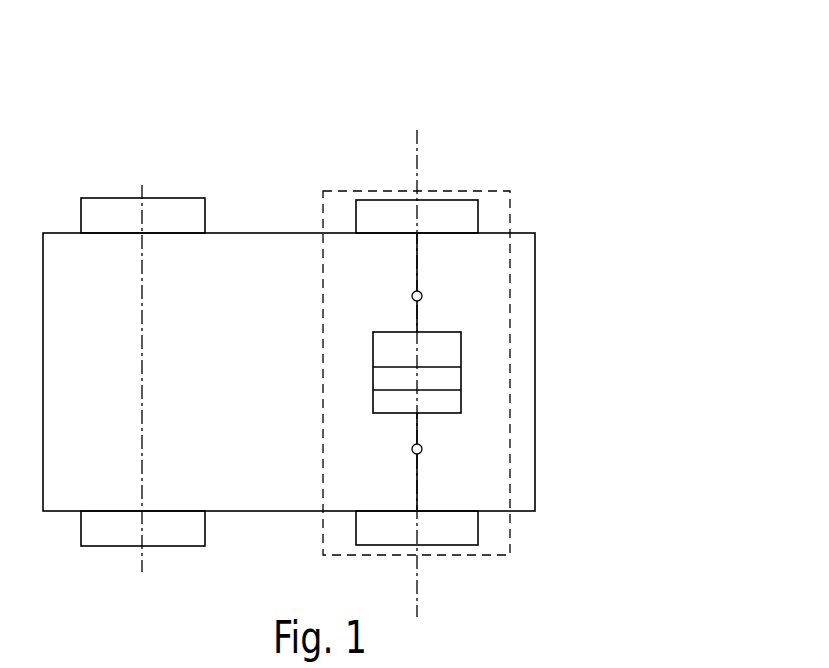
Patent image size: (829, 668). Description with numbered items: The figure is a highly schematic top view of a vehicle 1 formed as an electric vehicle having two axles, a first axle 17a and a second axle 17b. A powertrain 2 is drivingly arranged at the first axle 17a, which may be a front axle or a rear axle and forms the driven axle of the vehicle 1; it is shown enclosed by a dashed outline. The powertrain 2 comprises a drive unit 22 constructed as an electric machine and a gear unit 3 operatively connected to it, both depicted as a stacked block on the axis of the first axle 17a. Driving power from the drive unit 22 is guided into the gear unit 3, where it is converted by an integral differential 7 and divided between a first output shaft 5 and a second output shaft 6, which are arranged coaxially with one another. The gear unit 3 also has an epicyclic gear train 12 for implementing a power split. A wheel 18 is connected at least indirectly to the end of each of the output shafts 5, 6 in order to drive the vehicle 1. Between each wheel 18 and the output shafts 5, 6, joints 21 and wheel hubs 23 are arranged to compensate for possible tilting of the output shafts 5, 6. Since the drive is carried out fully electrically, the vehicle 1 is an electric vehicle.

The vehicle 1 is at (575, 130).
The powertrain 2 is at (512, 527).
The gear unit 3 is at (495, 424).
The first output shaft 5 is at (417, 315).
The second output shaft 6 is at (413, 425).
The integral differential 7 is at (443, 400).
The epicyclic gear train 12 is at (443, 380).
The first axle 17a is at (417, 130).
The second axle 17b is at (142, 185).
The wheel 18 is at (458, 215).
The joint 21 is at (412, 294).
The drive unit 22 is at (443, 350).
The wheel hub 23 is at (417, 279).